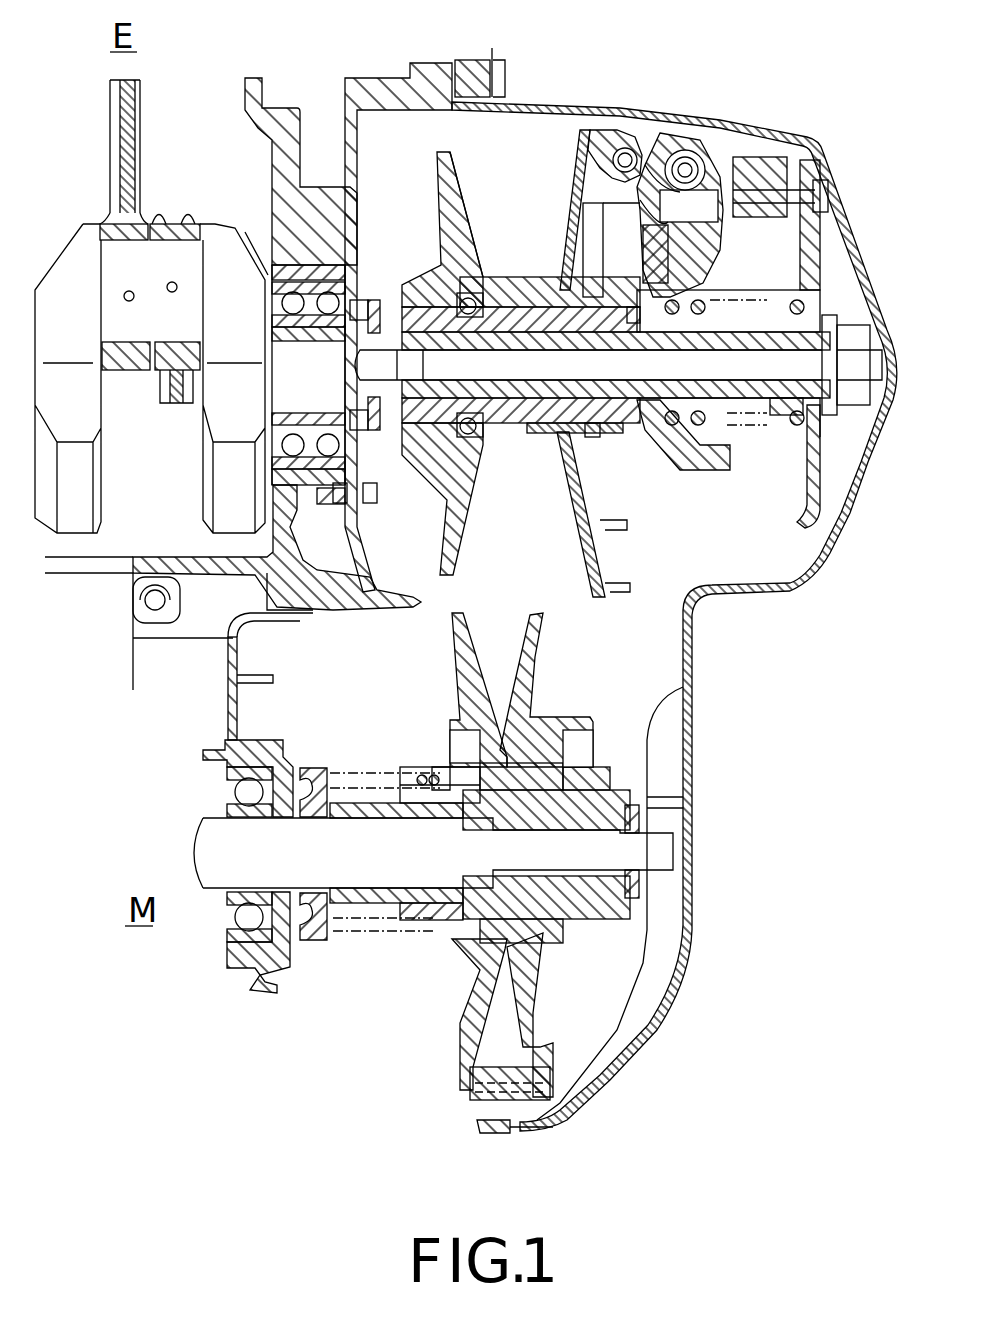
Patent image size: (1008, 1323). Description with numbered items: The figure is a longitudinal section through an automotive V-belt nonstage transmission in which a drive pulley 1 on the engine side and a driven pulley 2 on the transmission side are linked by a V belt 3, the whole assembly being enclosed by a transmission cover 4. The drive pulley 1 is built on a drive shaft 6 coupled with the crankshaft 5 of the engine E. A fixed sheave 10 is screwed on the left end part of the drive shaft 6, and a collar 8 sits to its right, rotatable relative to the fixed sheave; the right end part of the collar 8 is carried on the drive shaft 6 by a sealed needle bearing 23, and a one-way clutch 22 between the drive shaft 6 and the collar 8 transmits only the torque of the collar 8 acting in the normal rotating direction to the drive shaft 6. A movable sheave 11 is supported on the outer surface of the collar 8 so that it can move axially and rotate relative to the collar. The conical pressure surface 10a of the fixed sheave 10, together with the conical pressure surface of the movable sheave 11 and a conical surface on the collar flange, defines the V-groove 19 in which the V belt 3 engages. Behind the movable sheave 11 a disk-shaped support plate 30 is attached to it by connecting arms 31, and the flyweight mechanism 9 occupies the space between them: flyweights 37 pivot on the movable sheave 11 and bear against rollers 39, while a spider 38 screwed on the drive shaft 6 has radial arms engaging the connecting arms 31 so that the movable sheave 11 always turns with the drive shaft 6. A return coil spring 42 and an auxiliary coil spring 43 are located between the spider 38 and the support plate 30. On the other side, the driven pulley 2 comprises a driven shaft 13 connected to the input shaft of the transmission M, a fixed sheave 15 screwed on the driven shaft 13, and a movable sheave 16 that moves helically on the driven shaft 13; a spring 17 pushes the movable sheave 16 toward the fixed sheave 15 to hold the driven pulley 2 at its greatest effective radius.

The drive pulley 1 is at (432, 132).
The driven pulley 2 is at (440, 1113).
The V belt 3 is at (505, 277).
The transmission cover 4 is at (765, 130).
The crankshaft 5 is at (293, 390).
The drive shaft 6 is at (498, 437).
The collar 8 is at (514, 428).
The flyweight mechanism 9 is at (670, 128).
The fixed sheave 10 is at (437, 160).
The conical pressure surface 10a is at (479, 225).
The movable sheave 11 is at (610, 130).
The driven shaft 13 is at (223, 837).
The fixed sheave 15 is at (547, 650).
The movable sheave 16 is at (440, 656).
The spring 17 is at (362, 935).
The V-groove 19 is at (528, 178).
The one-way clutch 22 is at (544, 433).
The sealed needle bearing 23 is at (593, 433).
The support plate 30 is at (808, 165).
The connecting arms 31 is at (746, 160).
The flyweights 37 is at (724, 247).
The spider 38 is at (687, 467).
The rollers 39 is at (660, 128).
The return coil spring 42 is at (743, 428).
The auxiliary coil spring 43 is at (783, 433).